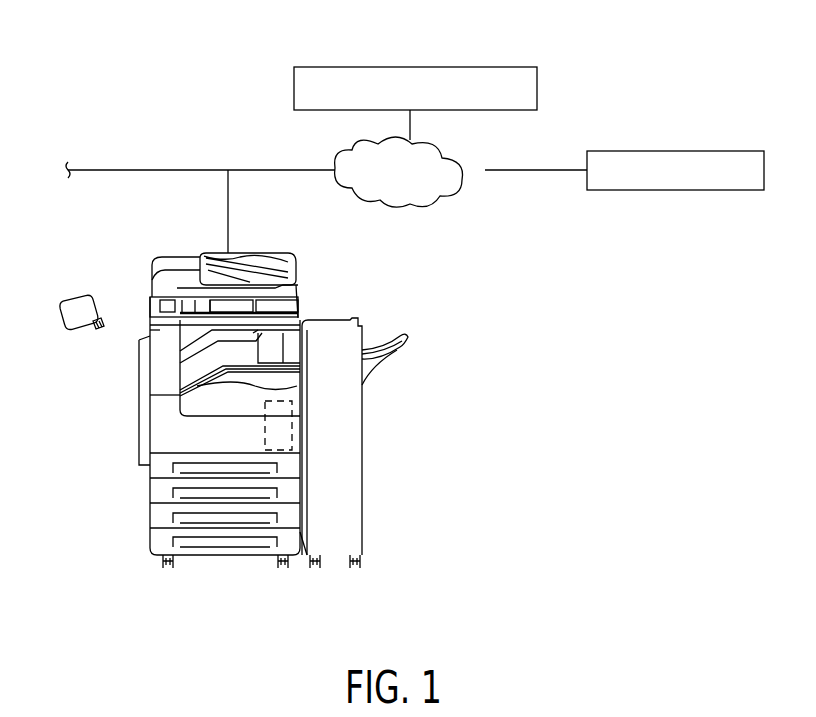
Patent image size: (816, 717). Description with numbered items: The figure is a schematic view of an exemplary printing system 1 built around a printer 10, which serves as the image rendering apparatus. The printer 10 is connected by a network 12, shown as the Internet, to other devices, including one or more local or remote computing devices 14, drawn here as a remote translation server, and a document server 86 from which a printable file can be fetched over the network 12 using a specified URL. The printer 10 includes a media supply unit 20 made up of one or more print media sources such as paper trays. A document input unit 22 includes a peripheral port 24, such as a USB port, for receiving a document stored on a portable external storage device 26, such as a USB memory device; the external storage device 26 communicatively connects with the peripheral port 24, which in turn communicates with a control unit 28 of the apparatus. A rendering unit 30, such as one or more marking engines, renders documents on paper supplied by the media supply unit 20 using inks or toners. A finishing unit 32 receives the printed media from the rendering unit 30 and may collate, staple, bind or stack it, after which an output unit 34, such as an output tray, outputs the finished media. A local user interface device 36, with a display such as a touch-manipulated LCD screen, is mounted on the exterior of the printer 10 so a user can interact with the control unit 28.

The printing system 1 is at (88, 78).
The printer 10 is at (338, 268).
The network 12 is at (336, 165).
The remote computing device 14 is at (294, 88).
The media supply unit 20 is at (213, 555).
The document input unit 22 is at (183, 267).
The peripheral port 24 is at (149, 304).
The portable external storage device 26 is at (80, 290).
The control unit 28 is at (282, 450).
The rendering unit 30 is at (250, 405).
The finishing unit 32 is at (332, 555).
The output unit 34 is at (410, 332).
The local user interface device 36 is at (150, 330).
The document server 86 is at (631, 151).